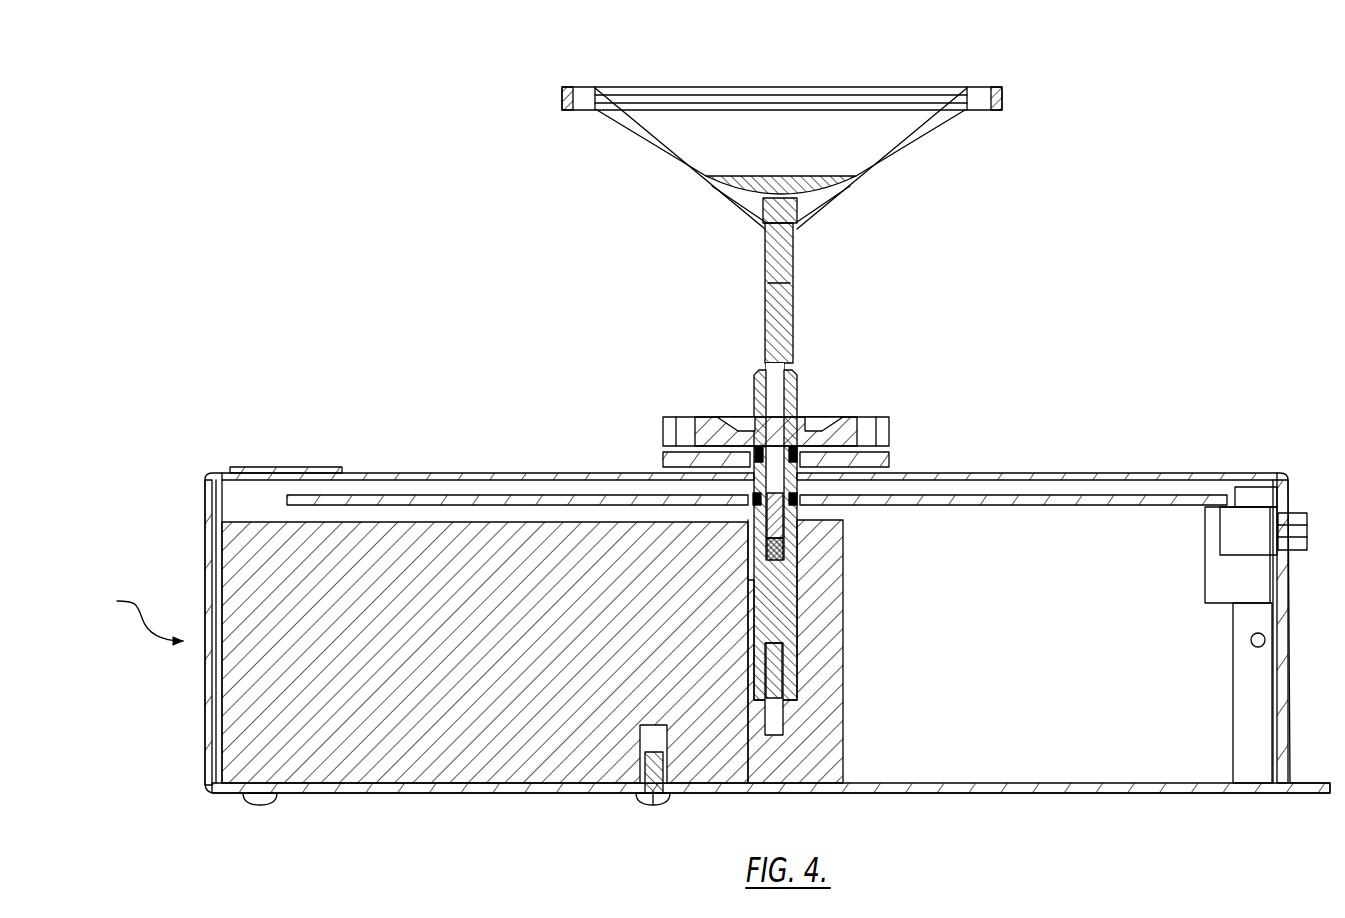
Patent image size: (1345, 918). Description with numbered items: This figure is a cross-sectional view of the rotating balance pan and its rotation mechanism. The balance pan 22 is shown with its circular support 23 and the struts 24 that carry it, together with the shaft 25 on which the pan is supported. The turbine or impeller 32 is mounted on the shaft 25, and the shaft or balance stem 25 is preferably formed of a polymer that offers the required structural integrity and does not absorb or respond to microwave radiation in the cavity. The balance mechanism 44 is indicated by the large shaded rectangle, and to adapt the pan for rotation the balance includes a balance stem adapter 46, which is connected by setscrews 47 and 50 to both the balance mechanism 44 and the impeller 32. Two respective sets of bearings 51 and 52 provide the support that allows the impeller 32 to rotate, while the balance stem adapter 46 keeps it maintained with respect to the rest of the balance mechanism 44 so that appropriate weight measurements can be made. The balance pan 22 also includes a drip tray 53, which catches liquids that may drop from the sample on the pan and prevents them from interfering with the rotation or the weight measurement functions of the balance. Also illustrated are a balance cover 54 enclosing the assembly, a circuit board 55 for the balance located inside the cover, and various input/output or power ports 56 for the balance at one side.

The balance pan 22 is at (965, 55).
The circular support 23 is at (820, 87).
The struts 24 is at (672, 150).
The shaft 25 is at (765, 308).
The turbine or impeller 32 is at (718, 420).
The balance mechanism 44 is at (455, 760).
The balance stem adapter 46 is at (792, 633).
The setscrew 47 is at (805, 670).
The setscrew 50 is at (782, 548).
The bearings 51 is at (800, 452).
The bearings 52 is at (802, 497).
The drip tray 53 is at (782, 197).
The balance cover 54 is at (462, 473).
The circuit board 55 is at (990, 506).
The input/output or power ports 56 is at (1288, 513).